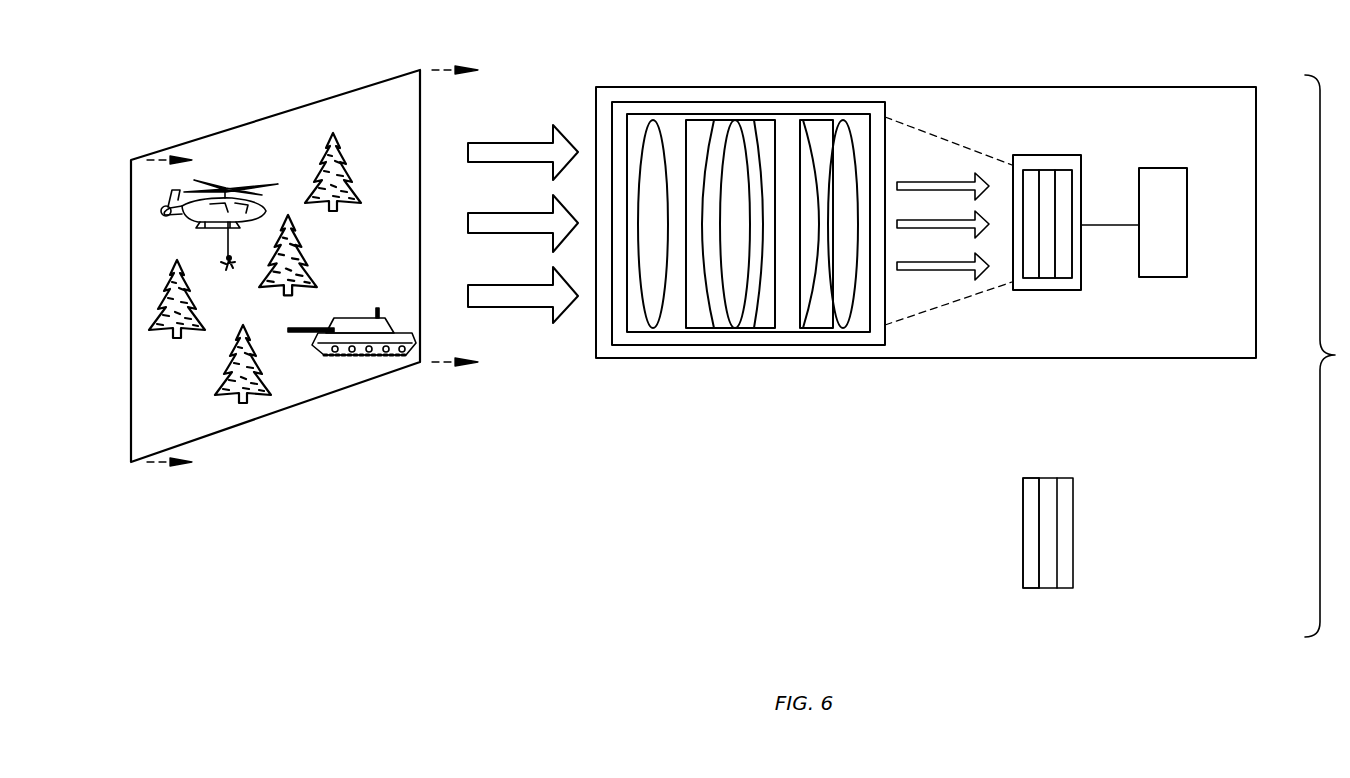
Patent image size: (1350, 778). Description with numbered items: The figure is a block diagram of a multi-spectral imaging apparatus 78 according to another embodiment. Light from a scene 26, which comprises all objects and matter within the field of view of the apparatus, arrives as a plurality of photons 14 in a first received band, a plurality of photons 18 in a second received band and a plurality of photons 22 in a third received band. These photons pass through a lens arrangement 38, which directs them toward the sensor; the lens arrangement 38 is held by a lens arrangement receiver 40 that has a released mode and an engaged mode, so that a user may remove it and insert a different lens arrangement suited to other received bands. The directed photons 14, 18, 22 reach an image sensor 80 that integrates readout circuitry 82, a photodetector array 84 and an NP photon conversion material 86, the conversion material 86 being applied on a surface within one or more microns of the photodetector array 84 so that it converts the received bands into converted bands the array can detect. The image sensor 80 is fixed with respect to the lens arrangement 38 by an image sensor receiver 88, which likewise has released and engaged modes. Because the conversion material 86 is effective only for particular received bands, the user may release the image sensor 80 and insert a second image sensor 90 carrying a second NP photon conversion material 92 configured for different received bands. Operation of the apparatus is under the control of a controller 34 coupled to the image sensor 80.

The imaging apparatus 78 is at (1124, 40).
The scene 26 is at (234, 127).
The plurality of photons in a first received band 14 is at (494, 143).
The plurality of photons in a second received band 18 is at (494, 213).
The plurality of photons in a third received band 22 is at (489, 285).
The lens arrangement receiver 40 is at (790, 102).
The lens arrangement 38 is at (640, 345).
The image sensor 80 is at (1073, 264).
The image sensor receiver 88 is at (1022, 283).
The NP photon conversion material 86 is at (1031, 172).
The photodetector array 84 is at (1046, 172).
The readout circuitry 82 is at (1063, 172).
The controller 34 is at (1187, 258).
The second image sensor 90 is at (1073, 478).
The second NP photon conversion material 92 is at (1031, 578).